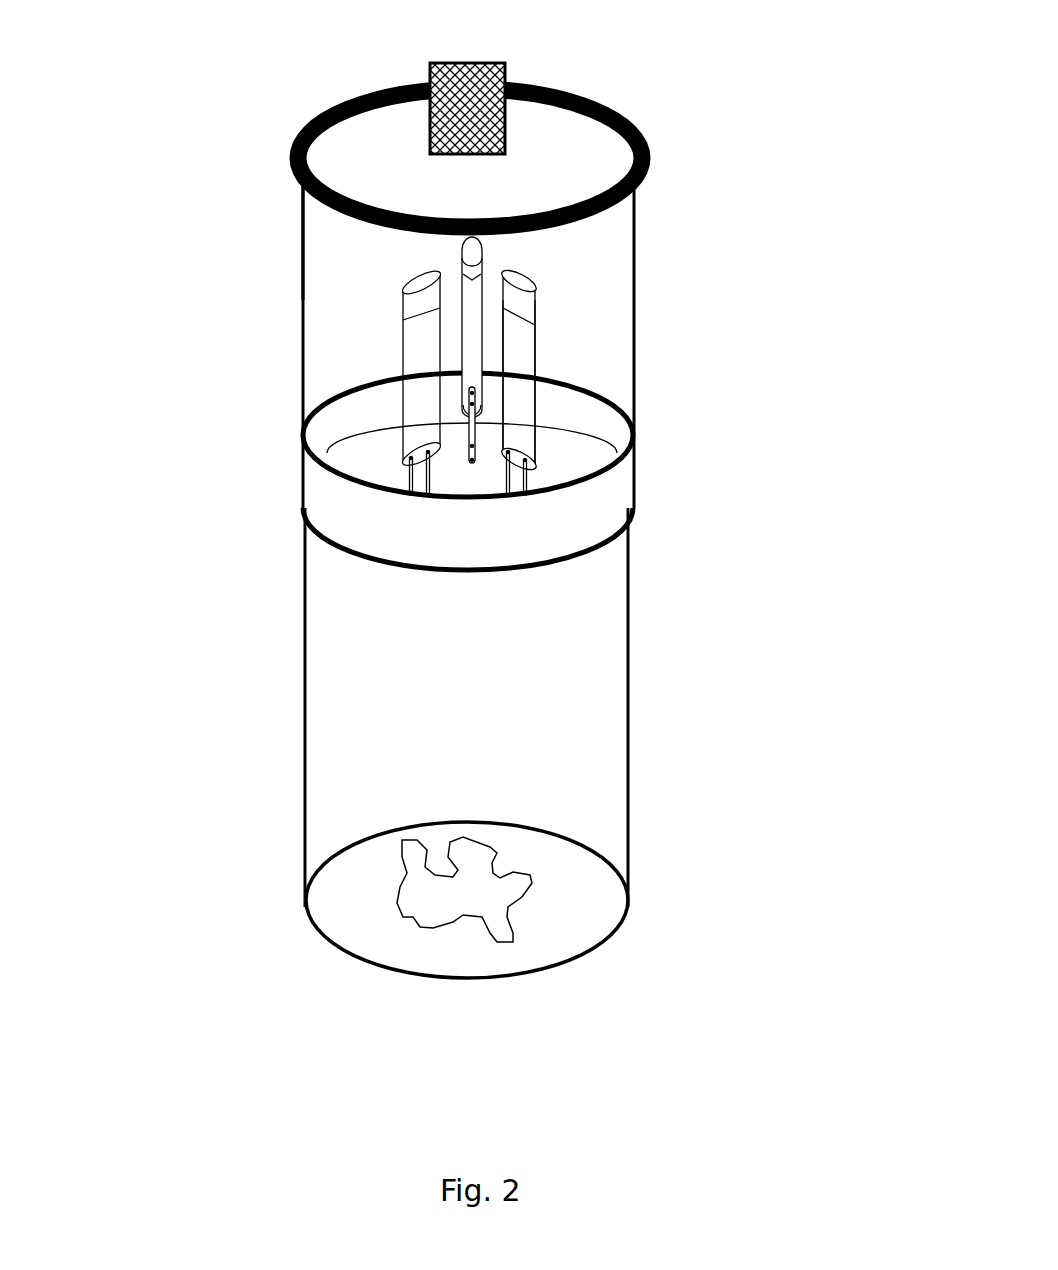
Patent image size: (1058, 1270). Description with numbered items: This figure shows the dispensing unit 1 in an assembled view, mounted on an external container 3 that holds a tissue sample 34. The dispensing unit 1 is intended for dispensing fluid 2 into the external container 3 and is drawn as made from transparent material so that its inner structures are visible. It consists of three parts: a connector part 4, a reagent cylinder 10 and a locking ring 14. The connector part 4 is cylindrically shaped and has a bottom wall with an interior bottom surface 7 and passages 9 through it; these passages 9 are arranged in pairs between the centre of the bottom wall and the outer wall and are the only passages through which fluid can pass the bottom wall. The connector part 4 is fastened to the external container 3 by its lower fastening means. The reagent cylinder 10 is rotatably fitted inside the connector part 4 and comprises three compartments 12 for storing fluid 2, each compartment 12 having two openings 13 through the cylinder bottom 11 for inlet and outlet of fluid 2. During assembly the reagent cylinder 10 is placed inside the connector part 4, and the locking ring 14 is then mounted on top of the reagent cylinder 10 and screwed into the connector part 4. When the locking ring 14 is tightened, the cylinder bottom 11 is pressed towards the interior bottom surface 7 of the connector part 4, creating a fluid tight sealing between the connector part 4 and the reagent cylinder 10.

The dispensing unit 1 is at (467, 501).
The fluid 2 is at (515, 312).
The external container 3 is at (306, 708).
The connector part 4 is at (332, 290).
The interior bottom surface 7 is at (372, 397).
The passages 9 is at (420, 480).
The reagent cylinder 10 is at (305, 216).
The cylinder bottom 11 is at (392, 455).
The compartments 12 is at (522, 345).
The openings 13 is at (527, 460).
The locking ring 14 is at (593, 98).
The tissue sample 34 is at (413, 887).